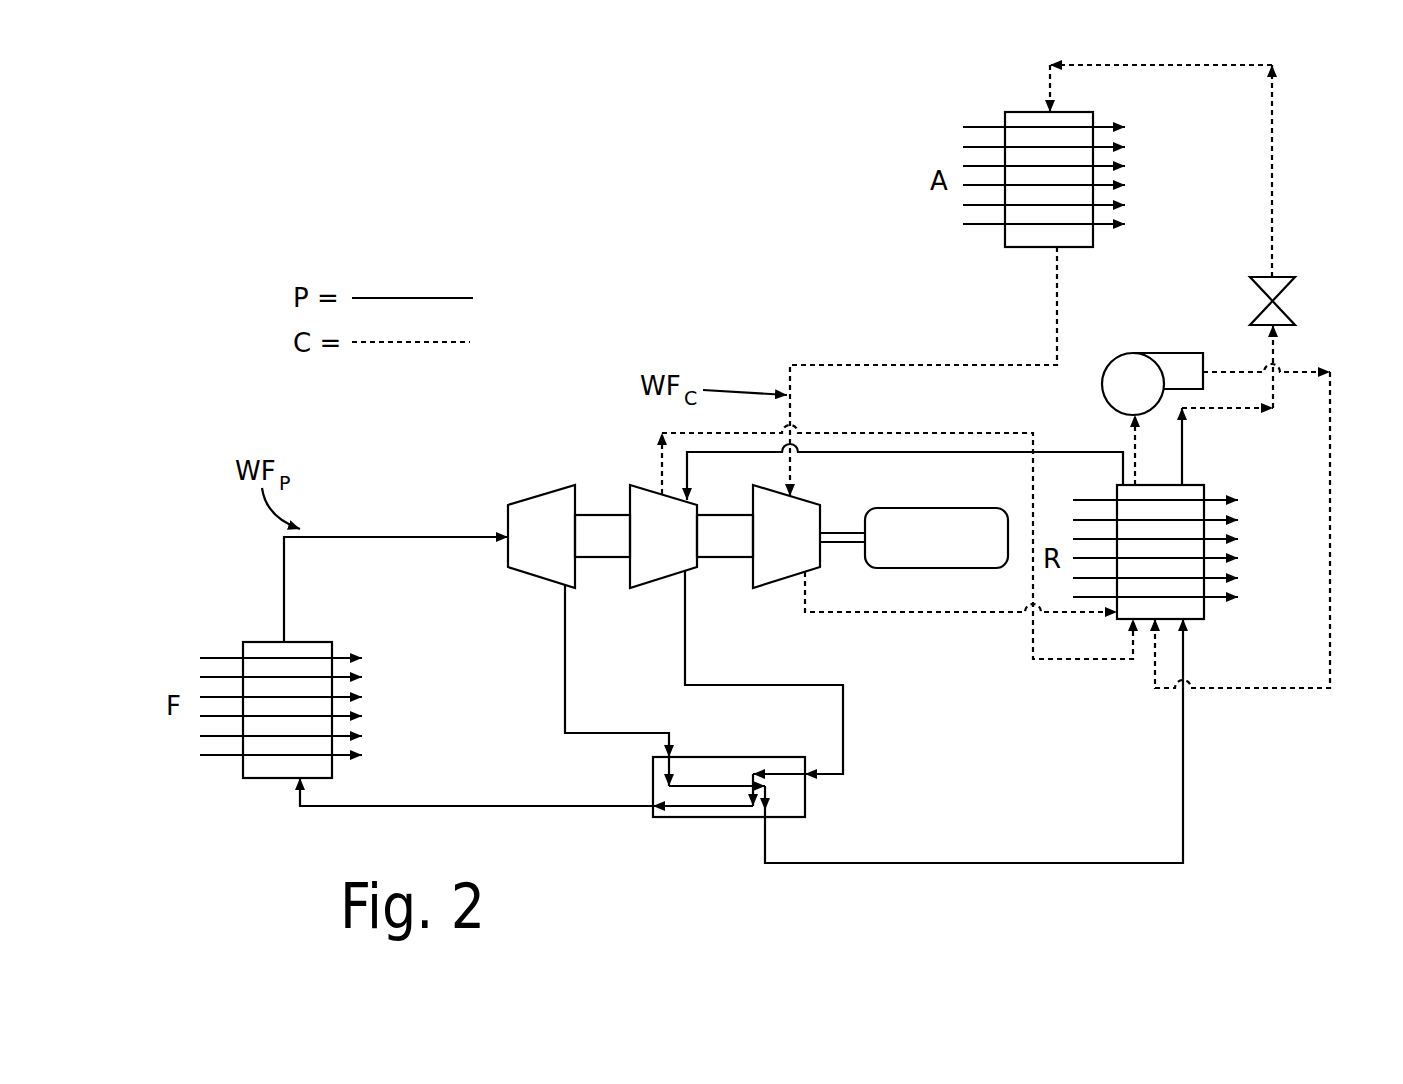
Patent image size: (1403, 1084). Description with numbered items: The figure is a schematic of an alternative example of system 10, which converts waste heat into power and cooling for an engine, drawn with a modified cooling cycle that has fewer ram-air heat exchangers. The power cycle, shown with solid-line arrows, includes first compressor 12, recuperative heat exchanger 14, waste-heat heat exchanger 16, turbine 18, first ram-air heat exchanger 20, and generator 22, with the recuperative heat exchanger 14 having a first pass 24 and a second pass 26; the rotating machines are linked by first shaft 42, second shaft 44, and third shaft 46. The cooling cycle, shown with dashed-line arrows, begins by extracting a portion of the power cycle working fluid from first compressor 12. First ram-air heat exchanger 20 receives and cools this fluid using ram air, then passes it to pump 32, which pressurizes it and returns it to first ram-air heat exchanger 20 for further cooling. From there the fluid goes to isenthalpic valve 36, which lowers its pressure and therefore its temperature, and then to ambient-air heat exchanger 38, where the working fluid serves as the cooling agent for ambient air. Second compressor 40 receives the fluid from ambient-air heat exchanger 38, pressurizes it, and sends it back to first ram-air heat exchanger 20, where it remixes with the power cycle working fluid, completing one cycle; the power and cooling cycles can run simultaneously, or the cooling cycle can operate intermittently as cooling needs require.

The system 10 is at (538, 217).
The first compressor 12 is at (647, 547).
The recuperative heat exchanger 14 is at (806, 804).
The waste-heat heat exchanger 16 is at (245, 642).
The turbine 18 is at (527, 547).
The first ram-air heat exchanger 20 is at (1205, 620).
The generator 22 is at (921, 547).
The first pass 24 is at (705, 810).
The second pass 26 is at (712, 787).
The pump 32 is at (1116, 397).
The isenthalpic valve 36 is at (1250, 277).
The ambient-air heat exchanger 38 is at (1093, 247).
The second compressor 40 is at (772, 547).
The first shaft 42 is at (587, 547).
The second shaft 44 is at (709, 547).
The third shaft 46 is at (845, 528).